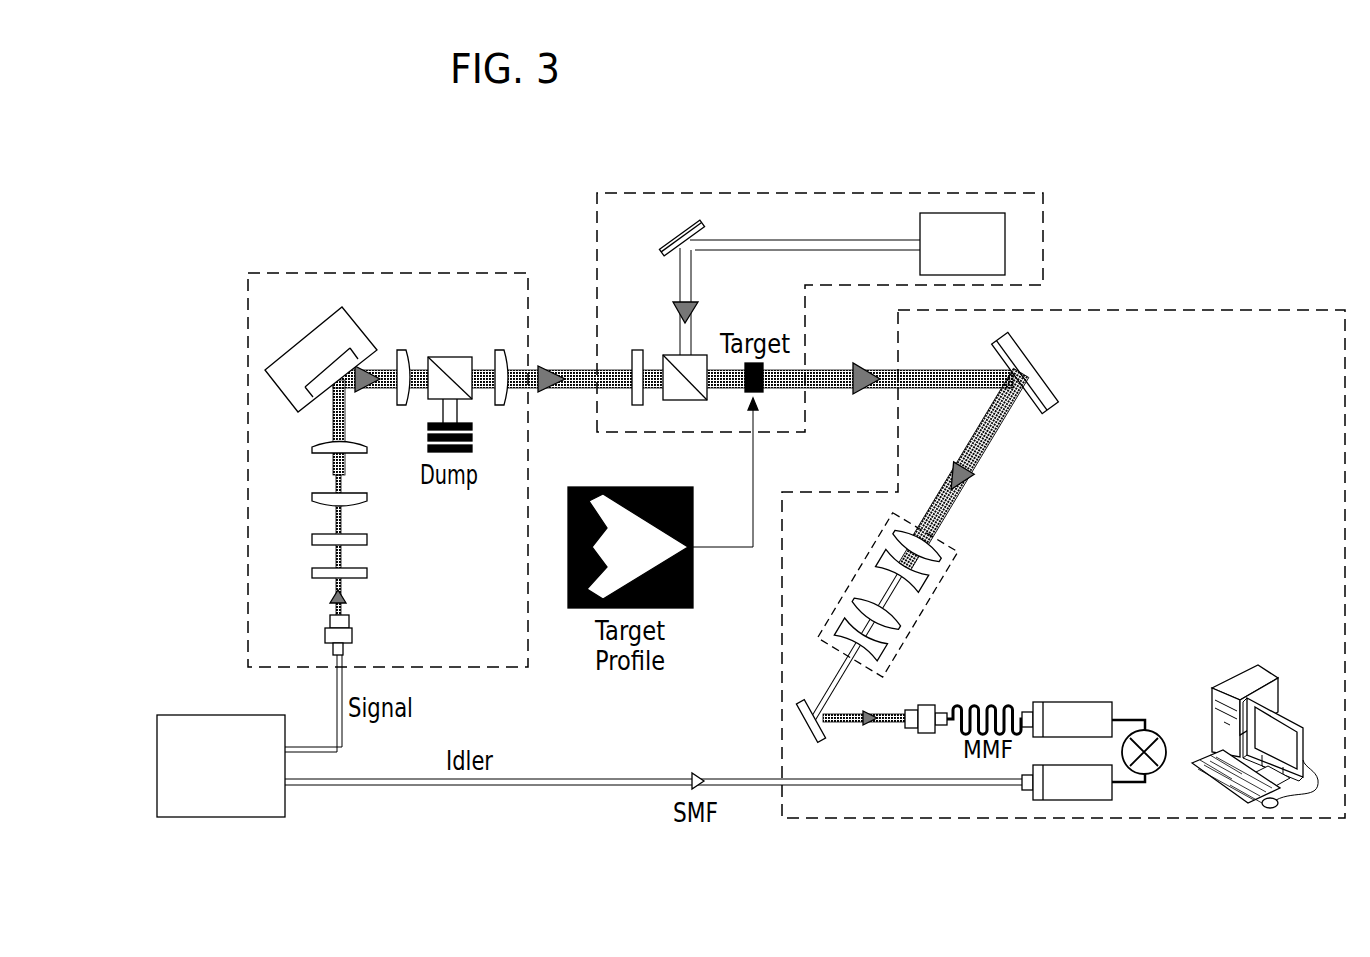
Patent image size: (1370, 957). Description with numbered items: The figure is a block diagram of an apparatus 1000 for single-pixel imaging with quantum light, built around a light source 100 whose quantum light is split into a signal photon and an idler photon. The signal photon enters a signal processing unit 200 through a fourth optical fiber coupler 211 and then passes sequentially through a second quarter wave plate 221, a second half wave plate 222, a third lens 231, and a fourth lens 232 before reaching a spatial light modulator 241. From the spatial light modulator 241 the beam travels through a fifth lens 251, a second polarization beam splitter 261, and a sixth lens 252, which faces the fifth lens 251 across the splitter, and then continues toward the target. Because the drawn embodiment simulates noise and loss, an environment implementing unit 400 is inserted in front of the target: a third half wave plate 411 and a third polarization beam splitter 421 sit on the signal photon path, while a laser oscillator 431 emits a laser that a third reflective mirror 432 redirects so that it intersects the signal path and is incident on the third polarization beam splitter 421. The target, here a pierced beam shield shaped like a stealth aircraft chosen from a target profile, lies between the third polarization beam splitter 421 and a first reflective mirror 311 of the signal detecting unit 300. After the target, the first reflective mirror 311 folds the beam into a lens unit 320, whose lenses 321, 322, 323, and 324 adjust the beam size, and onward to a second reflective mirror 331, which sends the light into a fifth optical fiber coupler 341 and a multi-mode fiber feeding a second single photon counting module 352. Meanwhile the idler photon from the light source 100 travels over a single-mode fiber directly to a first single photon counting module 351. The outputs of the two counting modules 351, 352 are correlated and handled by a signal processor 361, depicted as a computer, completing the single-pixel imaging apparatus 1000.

The apparatus for single-pixel imaging with quantum light 1000 is at (873, 130).
The light source 100 is at (199, 715).
The signal processing unit 200 is at (366, 273).
The fourth optical fiber coupler 211 is at (352, 636).
The second quarter wave plate 221 is at (367, 573).
The second half wave plate 222 is at (367, 539).
The third lens 231 is at (312, 500).
The fourth lens 232 is at (312, 447).
The spatial light modulator 241 is at (302, 340).
The fifth lens 251 is at (404, 350).
The sixth lens 252 is at (502, 350).
The second polarization beam splitter 261 is at (450, 357).
The signal detecting unit 300 is at (1198, 310).
The first reflective mirror 311 is at (1044, 370).
The lens unit 320 is at (867, 562).
The lens 321 is at (946, 564).
The lens 322 is at (933, 593).
The lens 323 is at (908, 633).
The lens 324 is at (890, 660).
The second reflective mirror 331 is at (799, 722).
The fifth optical fiber coupler 341 is at (924, 734).
The first single photon counting module 351 is at (1080, 800).
The second single photon counting module 352 is at (1080, 702).
The signal processor 361 is at (1238, 670).
The environment implementing unit 400 is at (768, 193).
The third half wave plate 411 is at (638, 350).
The third polarization beam splitter 421 is at (688, 400).
The laser oscillator 431 is at (963, 213).
The third reflective mirror 432 is at (678, 230).